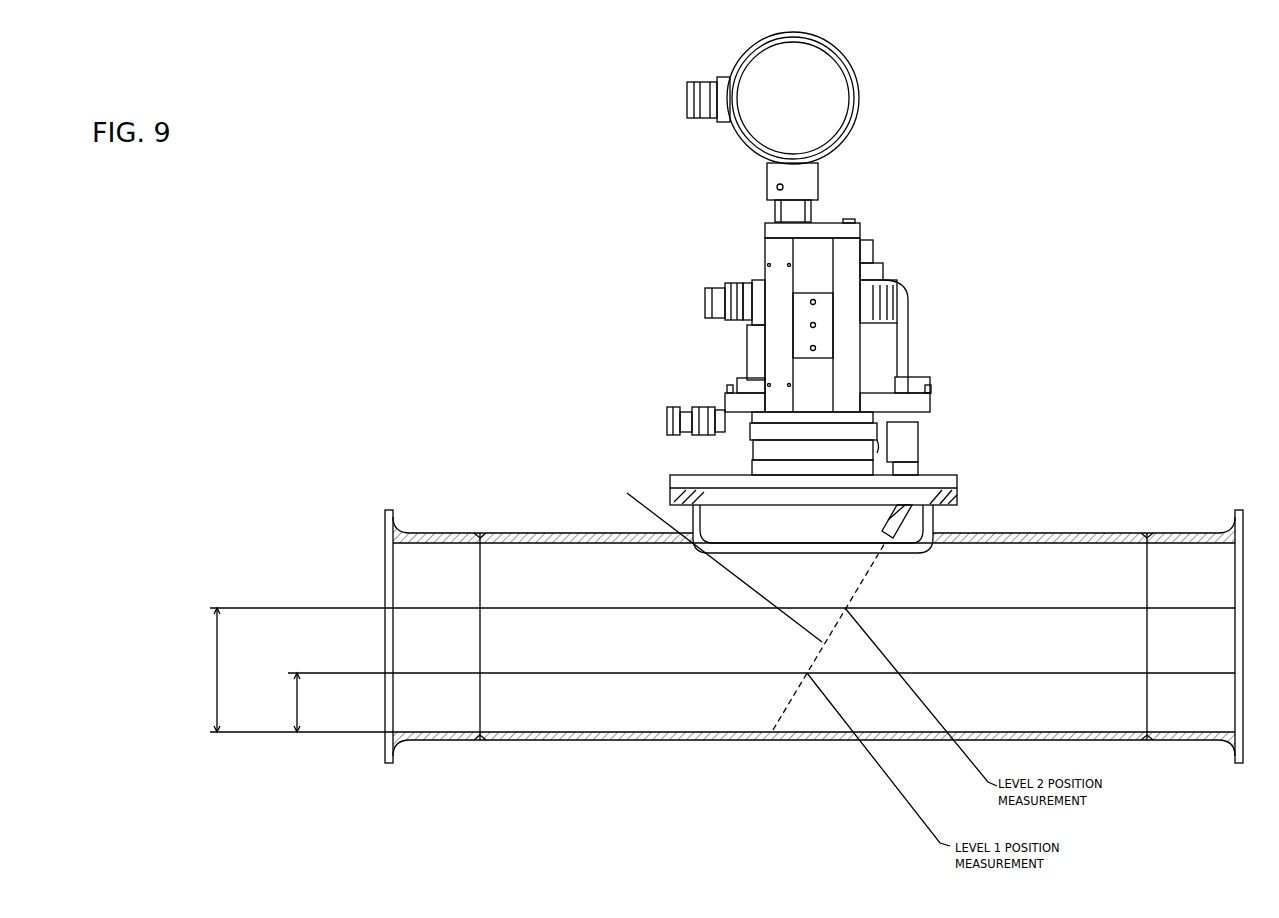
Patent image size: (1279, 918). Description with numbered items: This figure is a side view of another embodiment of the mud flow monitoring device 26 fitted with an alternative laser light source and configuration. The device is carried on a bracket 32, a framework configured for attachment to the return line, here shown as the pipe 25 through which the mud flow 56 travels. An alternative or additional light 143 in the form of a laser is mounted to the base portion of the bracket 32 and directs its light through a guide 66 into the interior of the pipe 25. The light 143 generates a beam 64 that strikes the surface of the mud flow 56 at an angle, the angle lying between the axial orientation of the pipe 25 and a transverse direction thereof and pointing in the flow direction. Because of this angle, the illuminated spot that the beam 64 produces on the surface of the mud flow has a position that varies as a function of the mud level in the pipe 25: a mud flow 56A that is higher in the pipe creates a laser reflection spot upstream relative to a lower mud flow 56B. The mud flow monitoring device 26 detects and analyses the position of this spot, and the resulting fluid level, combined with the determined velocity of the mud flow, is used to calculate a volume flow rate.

The return line / pipe 25 is at (1044, 536).
The mud flow monitoring device 26 is at (636, 259).
The bracket 32 is at (957, 479).
The mud flow 56 is at (764, 655).
The higher mud flow 56A is at (642, 653).
The lower mud flow 56B is at (640, 718).
The beam 64 is at (709, 555).
The guide 66 is at (935, 519).
The light (laser) 143 is at (920, 443).